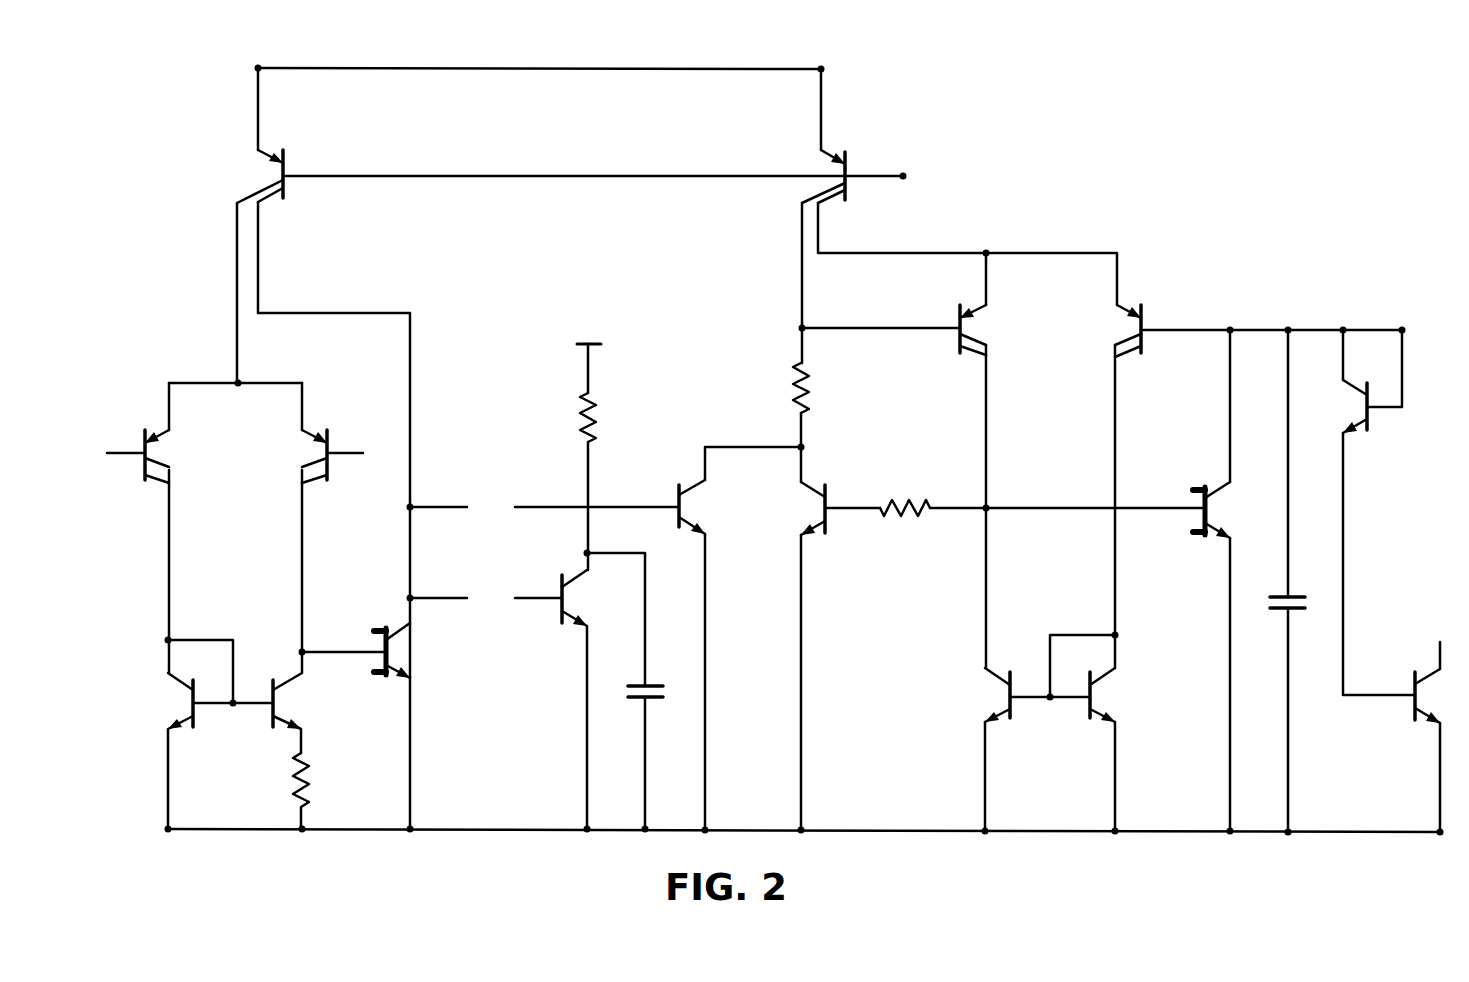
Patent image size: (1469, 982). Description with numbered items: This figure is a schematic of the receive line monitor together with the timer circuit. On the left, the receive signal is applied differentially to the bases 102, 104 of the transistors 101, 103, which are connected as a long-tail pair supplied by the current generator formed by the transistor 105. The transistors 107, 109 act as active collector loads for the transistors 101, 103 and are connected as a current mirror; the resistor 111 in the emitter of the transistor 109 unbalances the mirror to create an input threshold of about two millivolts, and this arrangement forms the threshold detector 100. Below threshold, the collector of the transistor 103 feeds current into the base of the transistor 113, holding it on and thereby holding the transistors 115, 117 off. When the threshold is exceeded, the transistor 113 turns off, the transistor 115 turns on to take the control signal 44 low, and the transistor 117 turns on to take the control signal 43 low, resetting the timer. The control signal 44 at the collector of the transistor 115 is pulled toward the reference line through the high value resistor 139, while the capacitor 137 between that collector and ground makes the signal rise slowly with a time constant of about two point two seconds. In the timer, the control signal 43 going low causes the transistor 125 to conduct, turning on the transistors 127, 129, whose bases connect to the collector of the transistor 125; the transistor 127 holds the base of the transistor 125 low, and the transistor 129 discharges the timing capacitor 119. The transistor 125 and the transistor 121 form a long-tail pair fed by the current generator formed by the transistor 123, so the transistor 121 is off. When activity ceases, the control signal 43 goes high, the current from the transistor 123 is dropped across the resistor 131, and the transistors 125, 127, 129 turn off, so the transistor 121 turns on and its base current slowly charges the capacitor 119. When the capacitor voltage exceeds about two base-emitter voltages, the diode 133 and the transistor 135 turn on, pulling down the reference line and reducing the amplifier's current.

The control signal 43 is at (752, 446).
The control signal 44 is at (591, 525).
The threshold detector 100 is at (209, 553).
The transistor 101 is at (140, 435).
The base 102 is at (107, 452).
The transistor 103 is at (330, 435).
The base 104 is at (360, 460).
The transistor 105 is at (286, 182).
The transistor 107 is at (195, 720).
The transistor 109 is at (274, 713).
The resistor 111 is at (309, 779).
The transistor 113 is at (375, 629).
The transistor 115 is at (570, 612).
The transistor 117 is at (676, 496).
The timing capacitor 119 is at (1298, 595).
The transistor 121 is at (1146, 312).
The transistor 123 is at (848, 160).
The transistor 125 is at (955, 340).
The transistor 127 is at (830, 520).
The transistor 129 is at (1194, 531).
The resistor 131 is at (811, 390).
The diode 133 is at (1372, 418).
The transistor 135 is at (1410, 678).
The capacitor 137 is at (658, 683).
The resistor 139 is at (585, 422).